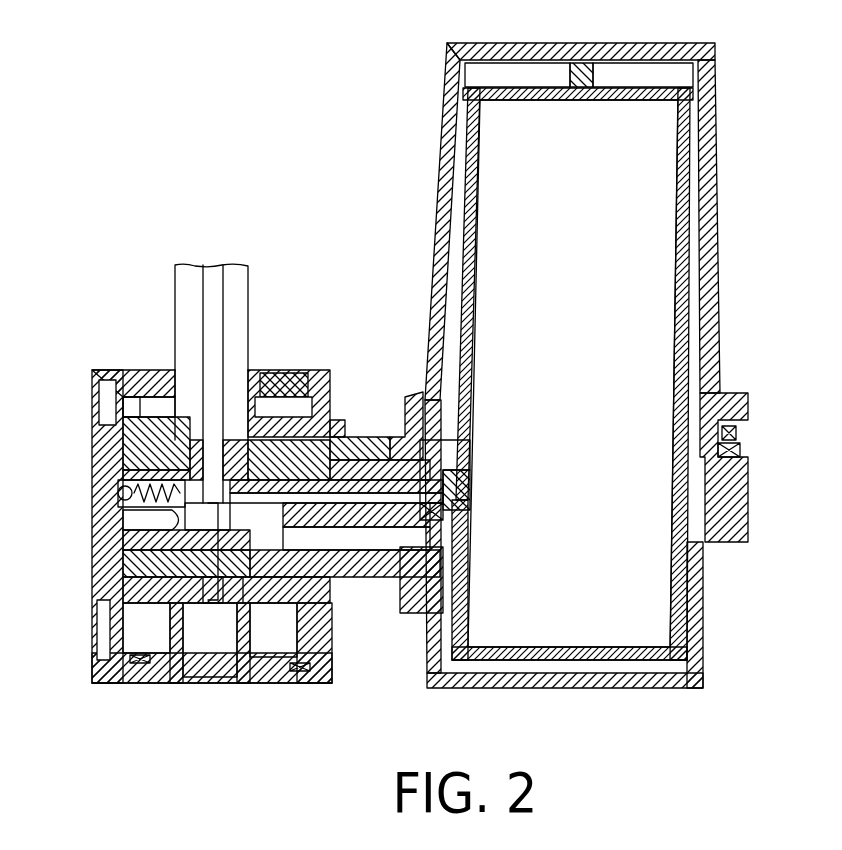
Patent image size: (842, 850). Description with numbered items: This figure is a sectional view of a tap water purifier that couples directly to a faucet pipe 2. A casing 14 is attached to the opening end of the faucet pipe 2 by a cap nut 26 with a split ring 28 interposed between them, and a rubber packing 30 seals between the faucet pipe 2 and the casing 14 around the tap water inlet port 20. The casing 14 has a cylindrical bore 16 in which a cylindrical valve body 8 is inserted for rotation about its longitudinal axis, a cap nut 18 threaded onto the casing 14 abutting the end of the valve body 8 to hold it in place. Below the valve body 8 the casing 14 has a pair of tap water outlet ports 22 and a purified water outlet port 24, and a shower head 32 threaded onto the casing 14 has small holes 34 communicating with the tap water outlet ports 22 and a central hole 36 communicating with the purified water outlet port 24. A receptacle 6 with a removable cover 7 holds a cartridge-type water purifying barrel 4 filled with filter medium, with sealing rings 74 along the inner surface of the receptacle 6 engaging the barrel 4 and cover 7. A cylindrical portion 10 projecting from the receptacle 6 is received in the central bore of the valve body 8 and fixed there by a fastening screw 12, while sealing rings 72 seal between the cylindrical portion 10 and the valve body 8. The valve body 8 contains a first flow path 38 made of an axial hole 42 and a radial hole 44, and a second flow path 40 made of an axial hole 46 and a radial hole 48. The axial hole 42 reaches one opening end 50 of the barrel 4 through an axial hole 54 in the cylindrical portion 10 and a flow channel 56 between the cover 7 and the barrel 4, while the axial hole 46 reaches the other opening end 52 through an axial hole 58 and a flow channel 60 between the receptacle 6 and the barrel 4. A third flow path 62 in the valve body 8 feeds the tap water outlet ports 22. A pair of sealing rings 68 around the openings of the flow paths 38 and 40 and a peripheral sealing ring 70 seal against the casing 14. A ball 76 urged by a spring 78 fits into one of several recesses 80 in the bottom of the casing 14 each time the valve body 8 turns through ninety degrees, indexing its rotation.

The faucet pipe 2 is at (183, 335).
The water purifying barrel 4 is at (658, 128).
The receptacle 6 is at (700, 608).
The cover 7 is at (708, 186).
The valve body 8 is at (120, 572).
The cylindrical portion 10 is at (350, 610).
The fastening screw 12 is at (255, 370).
The casing 14 is at (92, 445).
The cylindrical bore 16 is at (150, 660).
The cap nut 18 is at (380, 435).
The tap water inlet port 20 is at (207, 372).
The tap water outlet ports 22 is at (112, 600).
The purified water outlet port 24 is at (165, 660).
The cap nut 26 is at (128, 415).
The split ring 28 is at (152, 375).
The rubber packing 30 is at (90, 397).
The shower head 32 is at (92, 678).
The small holes 34 is at (130, 665).
The central hole 36 is at (203, 660).
The first flow path 38 is at (252, 385).
The second flow path 40 is at (220, 660).
The axial hole 42 is at (268, 380).
The radial hole 44 is at (218, 400).
The axial hole 46 is at (245, 660).
The radial hole 48 is at (212, 640).
The opening end 50 is at (607, 87).
The opening end 52 is at (590, 690).
The axial hole 54 is at (345, 438).
The flow channel 56 is at (462, 158).
The axial hole 58 is at (390, 615).
The flow channel 60 is at (460, 590).
The third flow path 62 is at (96, 420).
The sealing rings 68 is at (150, 405).
The sealing ring 70 is at (310, 380).
The sealing rings 72 is at (282, 660).
The sealing rings 74 is at (440, 440).
The ball 76 is at (110, 493).
The spring 78 is at (140, 520).
The recesses 80 is at (115, 545).